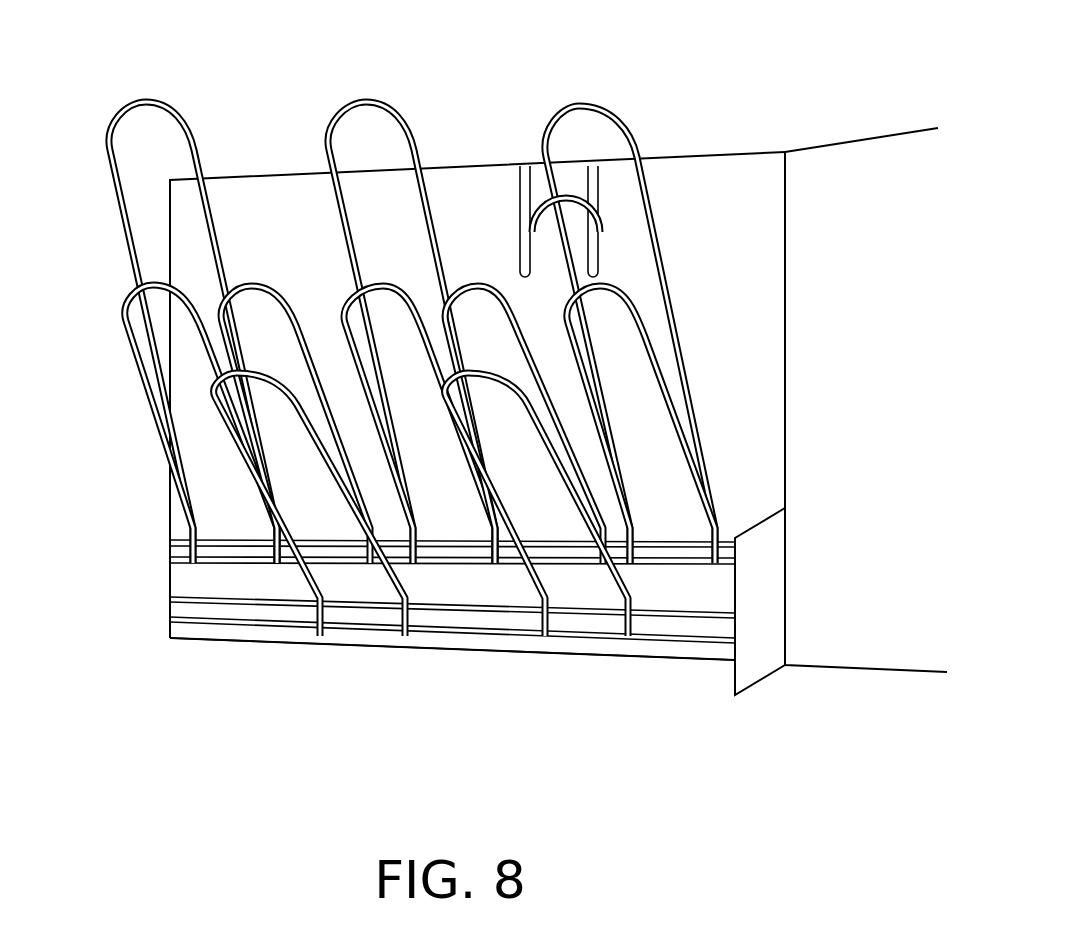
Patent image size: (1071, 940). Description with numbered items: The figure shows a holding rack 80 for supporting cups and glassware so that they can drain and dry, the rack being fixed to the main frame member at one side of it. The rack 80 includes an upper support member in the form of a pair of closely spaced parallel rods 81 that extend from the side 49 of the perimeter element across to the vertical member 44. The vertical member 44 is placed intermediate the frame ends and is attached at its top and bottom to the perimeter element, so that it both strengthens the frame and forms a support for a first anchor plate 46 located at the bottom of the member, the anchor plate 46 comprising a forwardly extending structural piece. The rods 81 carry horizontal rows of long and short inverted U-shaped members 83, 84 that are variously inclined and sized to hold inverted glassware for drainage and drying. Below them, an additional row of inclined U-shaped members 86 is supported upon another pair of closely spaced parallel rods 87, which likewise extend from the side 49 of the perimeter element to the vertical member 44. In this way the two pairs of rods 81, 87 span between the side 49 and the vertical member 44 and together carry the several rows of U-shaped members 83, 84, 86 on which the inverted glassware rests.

The vertical member 44 is at (787, 323).
The first anchor plate 46 is at (775, 580).
The side of perimeter element 49 is at (170, 492).
The holding rack 80 is at (316, 675).
The parallel rods 81 is at (233, 547).
The inverted U-shaped members 83 is at (298, 335).
The inverted U-shaped members 84 is at (360, 100).
The inclined U-shaped members 86 is at (340, 500).
The parallel rods 87 is at (668, 640).